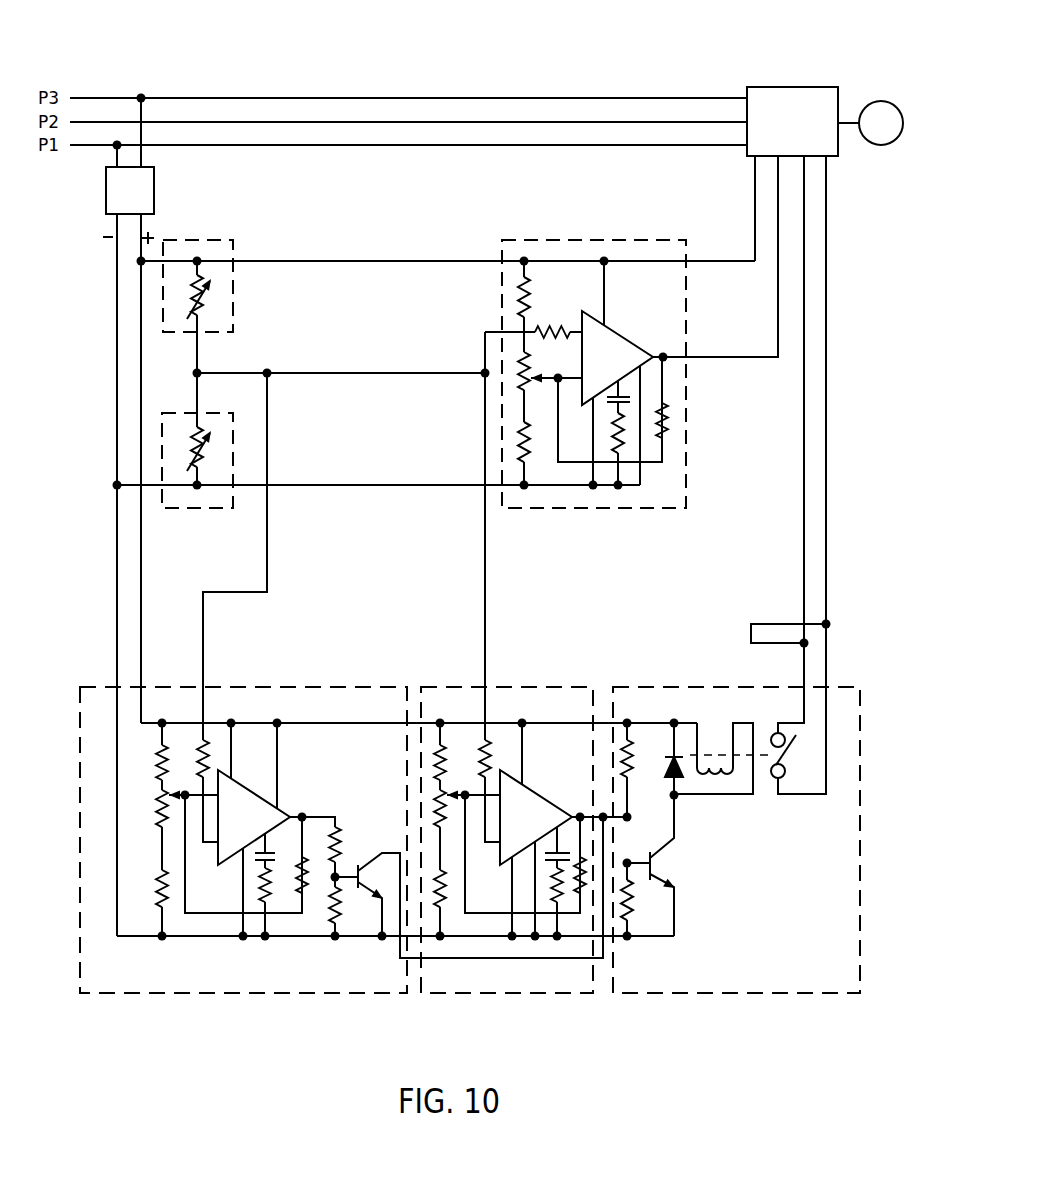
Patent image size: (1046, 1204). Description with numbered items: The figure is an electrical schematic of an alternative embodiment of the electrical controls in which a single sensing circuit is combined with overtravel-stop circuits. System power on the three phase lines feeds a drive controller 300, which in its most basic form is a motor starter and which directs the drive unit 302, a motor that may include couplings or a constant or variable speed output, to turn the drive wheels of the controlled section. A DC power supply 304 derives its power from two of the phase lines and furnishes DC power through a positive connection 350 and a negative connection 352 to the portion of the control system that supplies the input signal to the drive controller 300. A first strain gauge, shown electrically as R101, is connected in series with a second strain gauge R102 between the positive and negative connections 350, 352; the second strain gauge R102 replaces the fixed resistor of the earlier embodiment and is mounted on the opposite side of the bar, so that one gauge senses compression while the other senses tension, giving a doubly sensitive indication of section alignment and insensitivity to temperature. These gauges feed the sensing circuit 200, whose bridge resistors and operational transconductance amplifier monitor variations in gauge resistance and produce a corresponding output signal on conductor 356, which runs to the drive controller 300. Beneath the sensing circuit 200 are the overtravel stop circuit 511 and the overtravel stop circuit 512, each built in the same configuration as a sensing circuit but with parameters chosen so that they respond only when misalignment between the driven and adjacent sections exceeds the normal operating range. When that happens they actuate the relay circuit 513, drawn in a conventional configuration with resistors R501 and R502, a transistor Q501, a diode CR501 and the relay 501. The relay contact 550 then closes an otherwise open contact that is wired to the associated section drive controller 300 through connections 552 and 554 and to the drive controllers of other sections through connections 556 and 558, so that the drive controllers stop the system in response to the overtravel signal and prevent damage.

The DC power supply 304 is at (179, 194).
The negative connection 352 is at (106, 226).
The positive connection 350 is at (152, 226).
The drive controller 300 is at (786, 89).
The drive unit 302 is at (878, 156).
The strain gauge R101 is at (238, 306).
The second strain gauge R102 is at (197, 475).
The sensing circuit 200 is at (585, 400).
The conductor 356 is at (778, 285).
The connection 552 is at (803, 672).
The connection 554 is at (826, 672).
The connection 556 is at (780, 622).
The connection 558 is at (768, 646).
The overtravel stop circuit 511 is at (241, 856).
The overtravel stop circuit 512 is at (507, 865).
The relay circuit 513 is at (736, 855).
The resistor R501 is at (648, 770).
The resistor R502 is at (647, 899).
The transistor Q501 is at (663, 865).
The diode CR501 is at (656, 762).
The relay 501 is at (723, 758).
The relay contact 550 is at (796, 755).